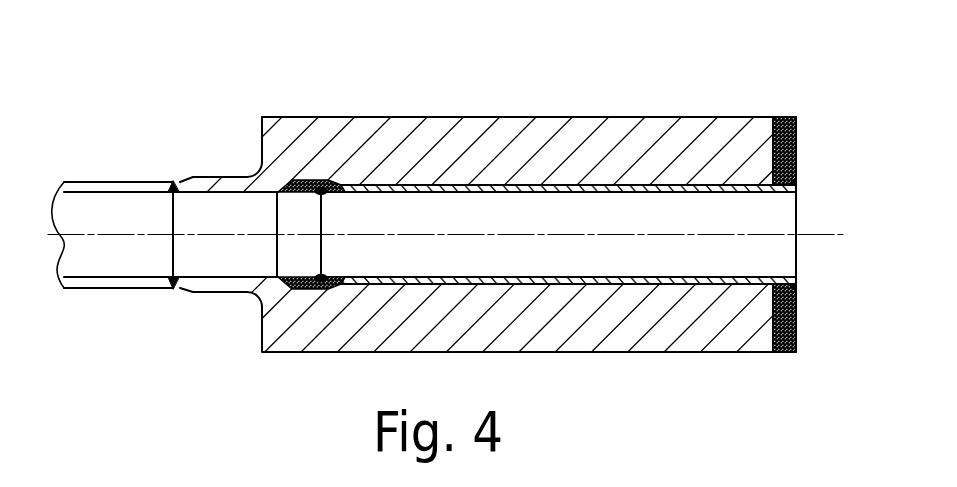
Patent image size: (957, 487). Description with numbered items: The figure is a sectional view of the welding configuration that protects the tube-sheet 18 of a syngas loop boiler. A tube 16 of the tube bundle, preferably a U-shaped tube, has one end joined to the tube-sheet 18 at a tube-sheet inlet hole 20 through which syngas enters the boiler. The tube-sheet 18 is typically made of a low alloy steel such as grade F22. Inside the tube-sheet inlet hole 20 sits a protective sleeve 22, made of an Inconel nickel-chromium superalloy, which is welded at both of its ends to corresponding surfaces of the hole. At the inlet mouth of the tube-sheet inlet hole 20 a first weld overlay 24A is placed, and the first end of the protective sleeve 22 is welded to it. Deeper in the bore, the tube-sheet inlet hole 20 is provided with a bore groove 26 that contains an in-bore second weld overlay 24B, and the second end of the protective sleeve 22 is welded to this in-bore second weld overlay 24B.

The tube 16 is at (123, 186).
The tube-sheet 18 is at (665, 118).
The tube-sheet inlet hole 20 is at (246, 194).
The protective sleeve 22 is at (708, 187).
The first weld overlay 24A is at (797, 148).
The in-bore second weld overlay 24B is at (302, 184).
The bore groove 26 is at (323, 189).